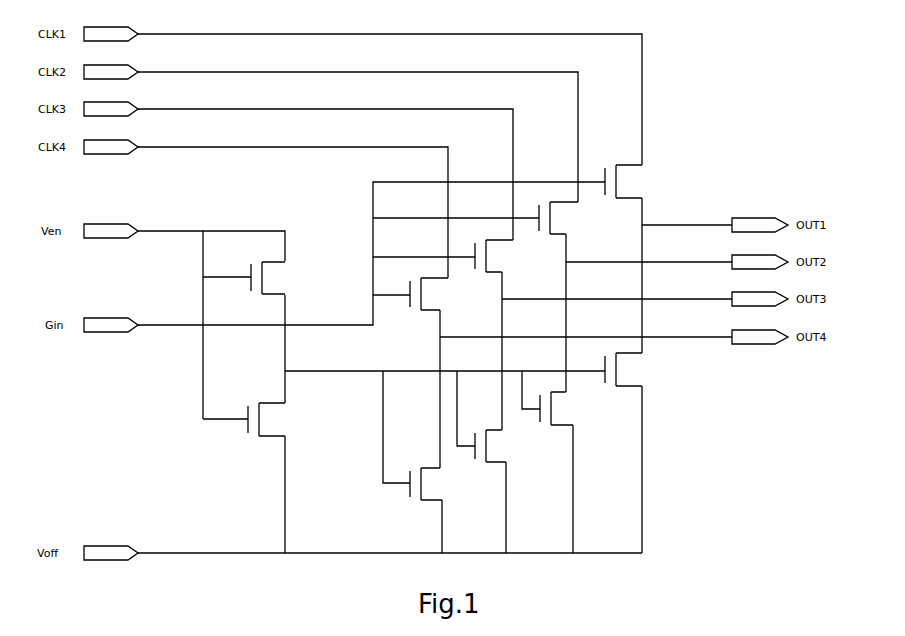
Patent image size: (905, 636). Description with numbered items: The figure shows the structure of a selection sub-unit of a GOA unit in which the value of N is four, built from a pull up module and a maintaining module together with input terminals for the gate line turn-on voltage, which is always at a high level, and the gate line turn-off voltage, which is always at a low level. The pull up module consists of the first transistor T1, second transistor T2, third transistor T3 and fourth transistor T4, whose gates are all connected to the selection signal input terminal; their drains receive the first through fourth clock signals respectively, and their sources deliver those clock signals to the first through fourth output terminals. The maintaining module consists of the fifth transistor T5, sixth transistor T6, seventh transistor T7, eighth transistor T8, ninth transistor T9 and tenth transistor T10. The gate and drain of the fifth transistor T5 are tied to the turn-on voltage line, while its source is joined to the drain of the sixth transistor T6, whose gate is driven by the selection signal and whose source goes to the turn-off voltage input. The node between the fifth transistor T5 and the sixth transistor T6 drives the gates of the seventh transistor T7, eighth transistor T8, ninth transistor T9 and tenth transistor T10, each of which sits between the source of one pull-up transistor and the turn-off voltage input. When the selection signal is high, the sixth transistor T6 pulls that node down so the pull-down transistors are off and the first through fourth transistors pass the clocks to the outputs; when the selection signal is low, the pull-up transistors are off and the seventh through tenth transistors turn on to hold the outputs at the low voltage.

The first transistor T1 is at (623, 181).
The second transistor T2 is at (558, 218).
The third transistor T3 is at (494, 256).
The fourth transistor T4 is at (429, 294).
The fifth transistor T5 is at (244, 278).
The sixth transistor T6 is at (244, 419).
The seventh transistor T7 is at (623, 369).
The eighth transistor T8 is at (556, 408).
The ninth transistor T9 is at (490, 446).
The tenth transistor T10 is at (428, 484).